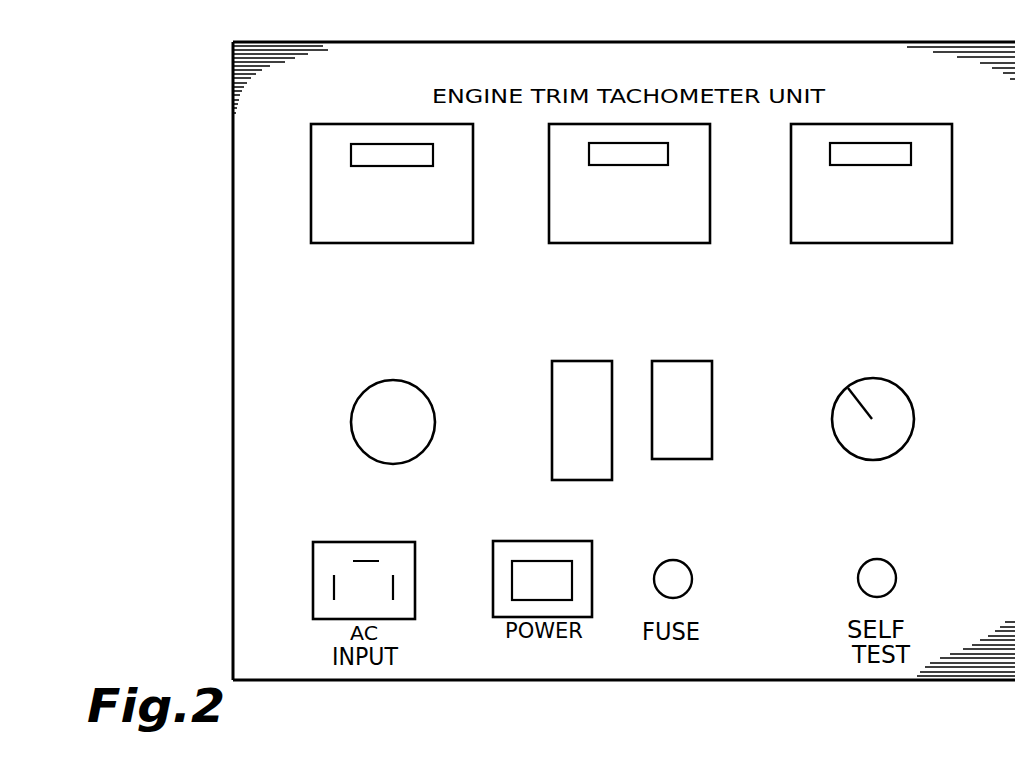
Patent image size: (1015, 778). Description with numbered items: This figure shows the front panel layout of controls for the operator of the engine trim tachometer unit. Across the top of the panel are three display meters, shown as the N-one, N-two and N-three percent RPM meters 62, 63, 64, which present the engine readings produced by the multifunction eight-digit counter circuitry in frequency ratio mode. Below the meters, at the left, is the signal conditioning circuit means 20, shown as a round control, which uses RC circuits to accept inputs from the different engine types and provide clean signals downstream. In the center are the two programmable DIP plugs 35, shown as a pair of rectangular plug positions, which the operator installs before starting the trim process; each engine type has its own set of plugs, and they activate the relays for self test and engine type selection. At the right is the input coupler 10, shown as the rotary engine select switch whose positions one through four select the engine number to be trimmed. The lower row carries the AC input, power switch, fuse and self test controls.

The N2 meter means 62 is at (331, 123).
The N3 meter means 63 is at (710, 146).
The N3 percent RPM display 64 is at (952, 152).
The signal conditioning circuit means 20 is at (351, 421).
The programmable DIP plugs 35 is at (655, 370).
The input coupler 10 is at (914, 412).